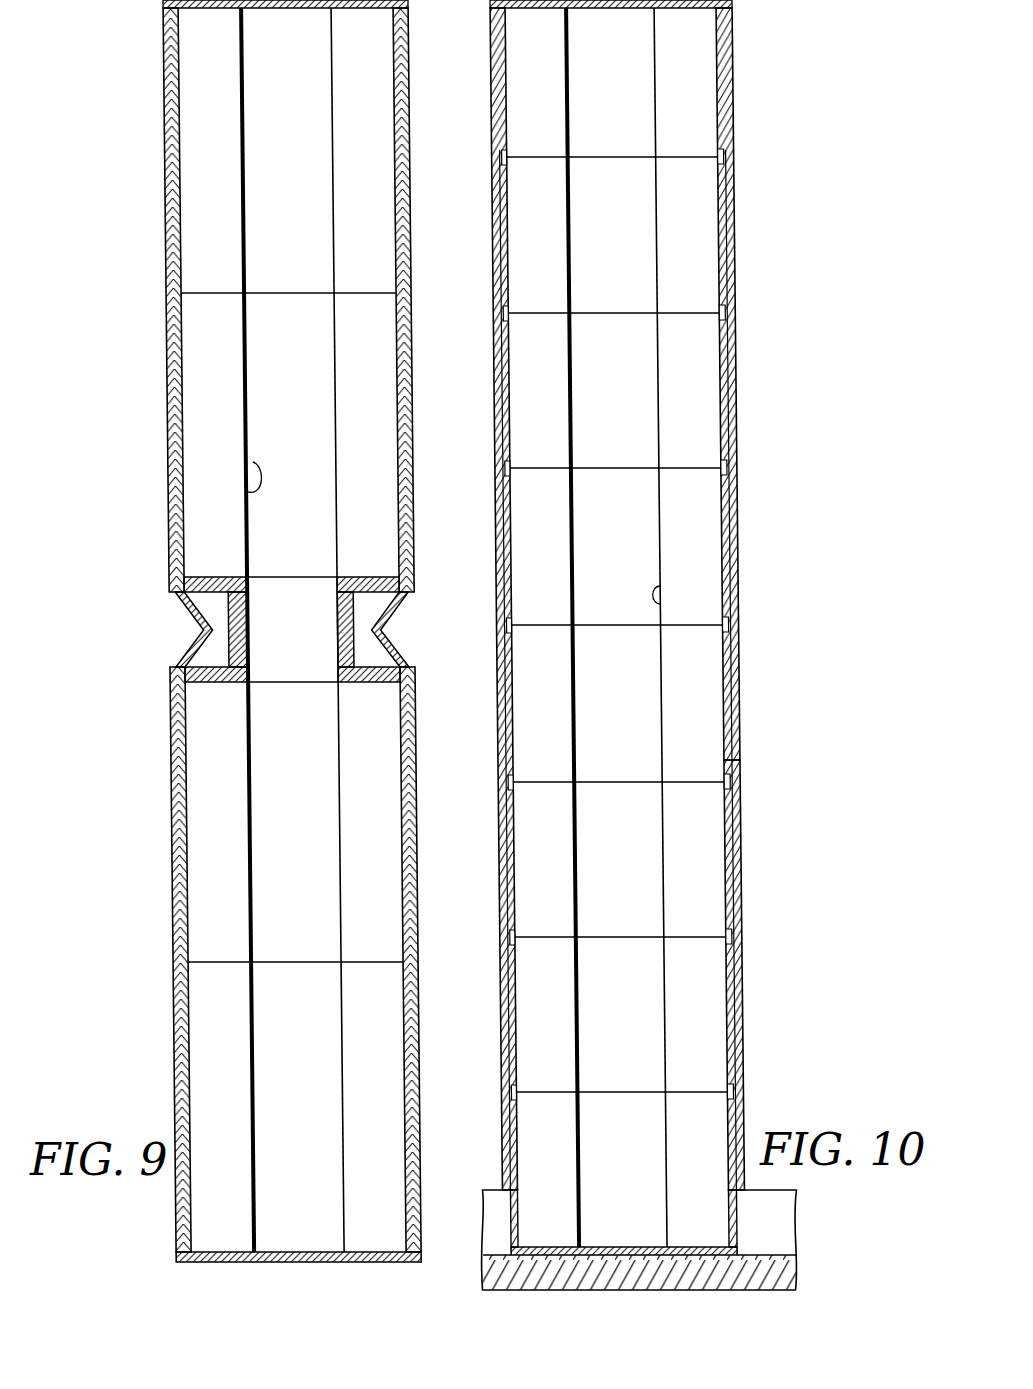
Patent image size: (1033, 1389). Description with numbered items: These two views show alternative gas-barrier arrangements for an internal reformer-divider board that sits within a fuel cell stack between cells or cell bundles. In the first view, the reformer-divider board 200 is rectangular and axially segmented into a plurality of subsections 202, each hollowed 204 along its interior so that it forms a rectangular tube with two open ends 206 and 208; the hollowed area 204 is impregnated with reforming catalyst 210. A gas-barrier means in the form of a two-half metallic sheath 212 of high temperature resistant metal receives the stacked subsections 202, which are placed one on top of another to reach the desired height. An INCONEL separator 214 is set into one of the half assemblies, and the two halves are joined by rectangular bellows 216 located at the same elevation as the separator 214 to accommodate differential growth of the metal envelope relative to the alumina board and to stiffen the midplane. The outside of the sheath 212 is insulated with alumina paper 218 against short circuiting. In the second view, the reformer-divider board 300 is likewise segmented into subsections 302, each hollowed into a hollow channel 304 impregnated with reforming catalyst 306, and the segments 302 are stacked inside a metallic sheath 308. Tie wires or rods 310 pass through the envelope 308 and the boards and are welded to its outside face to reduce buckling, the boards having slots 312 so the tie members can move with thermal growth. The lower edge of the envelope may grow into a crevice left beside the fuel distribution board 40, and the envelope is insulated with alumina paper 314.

In FIG. 9, the reformer-divider board 200 is at (147, 30).
In FIG. 9, the subsection 202 is at (190, 88).
In FIG. 9, the hollowed area 204 is at (260, 388).
In FIG. 9, the open end 206 is at (258, 560).
In FIG. 9, the open end 208 is at (262, 315).
In FIG. 9, the reforming catalyst 210 is at (333, 472).
In FIG. 9, the metallic sheath 212 is at (176, 565).
In FIG. 9, the INCONEL separator 214 is at (200, 629).
In FIG. 9, the rectangular bellows 216 is at (185, 652).
In FIG. 9, the alumina paper 218 is at (165, 452).
In FIG. 10, the reformer-divider board 300 is at (779, 42).
In FIG. 10, the subsection 302 is at (693, 93).
In FIG. 10, the hollow channel 304 is at (647, 537).
In FIG. 10, the reforming catalyst 306 is at (573, 595).
In FIG. 10, the metallic sheath 308 is at (730, 690).
In FIG. 10, the tie wires or rods 310 is at (684, 158).
In FIG. 10, the slots 312 is at (735, 780).
In FIG. 10, the alumina paper 314 is at (740, 873).
In FIG. 10, the fuel distribution board 40 is at (780, 1248).